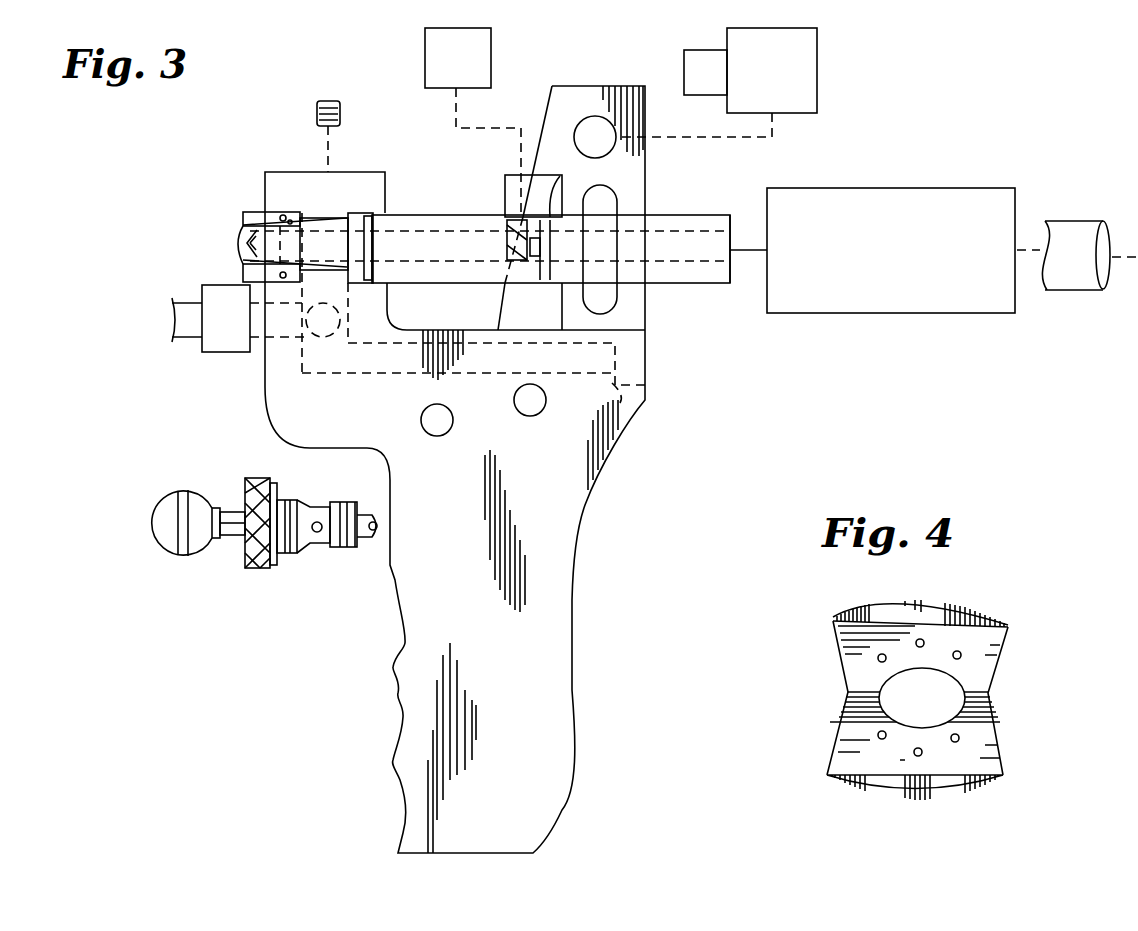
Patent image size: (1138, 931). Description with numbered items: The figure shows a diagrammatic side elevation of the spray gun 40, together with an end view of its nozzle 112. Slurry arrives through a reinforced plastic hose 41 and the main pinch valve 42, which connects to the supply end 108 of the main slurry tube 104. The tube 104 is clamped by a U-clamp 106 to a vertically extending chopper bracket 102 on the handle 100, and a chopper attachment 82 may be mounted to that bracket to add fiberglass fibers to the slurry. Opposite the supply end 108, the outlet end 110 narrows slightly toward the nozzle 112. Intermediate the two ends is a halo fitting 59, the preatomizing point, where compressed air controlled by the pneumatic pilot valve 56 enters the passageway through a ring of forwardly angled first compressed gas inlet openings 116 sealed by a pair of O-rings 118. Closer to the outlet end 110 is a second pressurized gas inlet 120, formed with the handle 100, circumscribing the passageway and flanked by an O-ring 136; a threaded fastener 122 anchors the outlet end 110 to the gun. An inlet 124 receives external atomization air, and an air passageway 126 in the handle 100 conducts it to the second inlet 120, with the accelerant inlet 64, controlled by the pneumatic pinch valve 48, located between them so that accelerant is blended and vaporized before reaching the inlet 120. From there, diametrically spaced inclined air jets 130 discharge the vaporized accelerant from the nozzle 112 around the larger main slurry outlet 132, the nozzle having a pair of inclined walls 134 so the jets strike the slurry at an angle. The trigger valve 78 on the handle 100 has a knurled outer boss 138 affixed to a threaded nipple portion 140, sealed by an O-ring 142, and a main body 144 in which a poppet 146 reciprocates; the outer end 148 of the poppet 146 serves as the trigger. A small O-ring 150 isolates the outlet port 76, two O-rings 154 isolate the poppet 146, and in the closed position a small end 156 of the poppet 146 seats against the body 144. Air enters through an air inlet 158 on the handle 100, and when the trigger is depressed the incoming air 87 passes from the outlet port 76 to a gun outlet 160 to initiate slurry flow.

In FIG. 3, the spray gun 40 is at (152, 227).
In FIG. 3, the reinforced plastic hose 41 is at (1080, 240).
In FIG. 3, the main pinch valve 42 is at (900, 263).
In FIG. 3, the pneumatic pinch valve 48 is at (215, 345).
In FIG. 3, the pneumatic pilot valve 56 is at (475, 72).
In FIG. 3, the halo fitting 59 is at (513, 176).
In FIG. 3, the accelerant inlet 64 is at (325, 338).
In FIG. 3, the outlet port 76 is at (317, 533).
In FIG. 3, the trigger valve 78 is at (122, 516).
In FIG. 3, the chopper attachment 82 is at (789, 84).
In FIG. 3, the incoming air 87 is at (373, 540).
In FIG. 3, the handle 100 is at (554, 687).
In FIG. 3, the chopper bracket 102 is at (643, 166).
In FIG. 3, the main slurry tube 104 is at (668, 285).
In FIG. 3, the U-clamp 106 is at (604, 203).
In FIG. 3, the supply end 108 is at (733, 285).
In FIG. 3, the outlet end 110 is at (250, 210).
In FIG. 3, the nozzle 112 is at (243, 268).
In FIG. 4, the nozzle 112 is at (807, 632).
In FIG. 3, the first compressed gas inlet openings 116 is at (535, 283).
In FIG. 3, the O-rings 118 is at (513, 213).
In FIG. 3, the second pressurized gas inlet 120 is at (357, 172).
In FIG. 3, the threaded fastener 122 is at (328, 99).
In FIG. 3, the inlet 124 is at (645, 367).
In FIG. 3, the air passageway 126 is at (633, 412).
In FIG. 3, the air jets 130 is at (280, 212).
In FIG. 4, the air jets 130 is at (958, 653).
In FIG. 3, the main slurry outlet 132 is at (234, 244).
In FIG. 4, the main slurry outlet 132 is at (948, 713).
In FIG. 4, the inclined walls 134 is at (878, 657).
In FIG. 3, the O-ring 136 is at (283, 212).
In FIG. 3, the knurled outer boss 138 is at (247, 567).
In FIG. 3, the threaded nipple portion 140 is at (290, 553).
In FIG. 3, the O-ring 142 is at (273, 493).
In FIG. 3, the main body 144 is at (307, 547).
In FIG. 3, the poppet 146 is at (233, 518).
In FIG. 3, the outer end 148 is at (147, 535).
In FIG. 3, the small O-ring 150 is at (350, 510).
In FIG. 3, the O-rings 154 is at (220, 510).
In FIG. 3, the small end 156 is at (383, 537).
In FIG. 3, the air inlet 158 is at (540, 416).
In FIG. 3, the gun outlet 160 is at (424, 411).